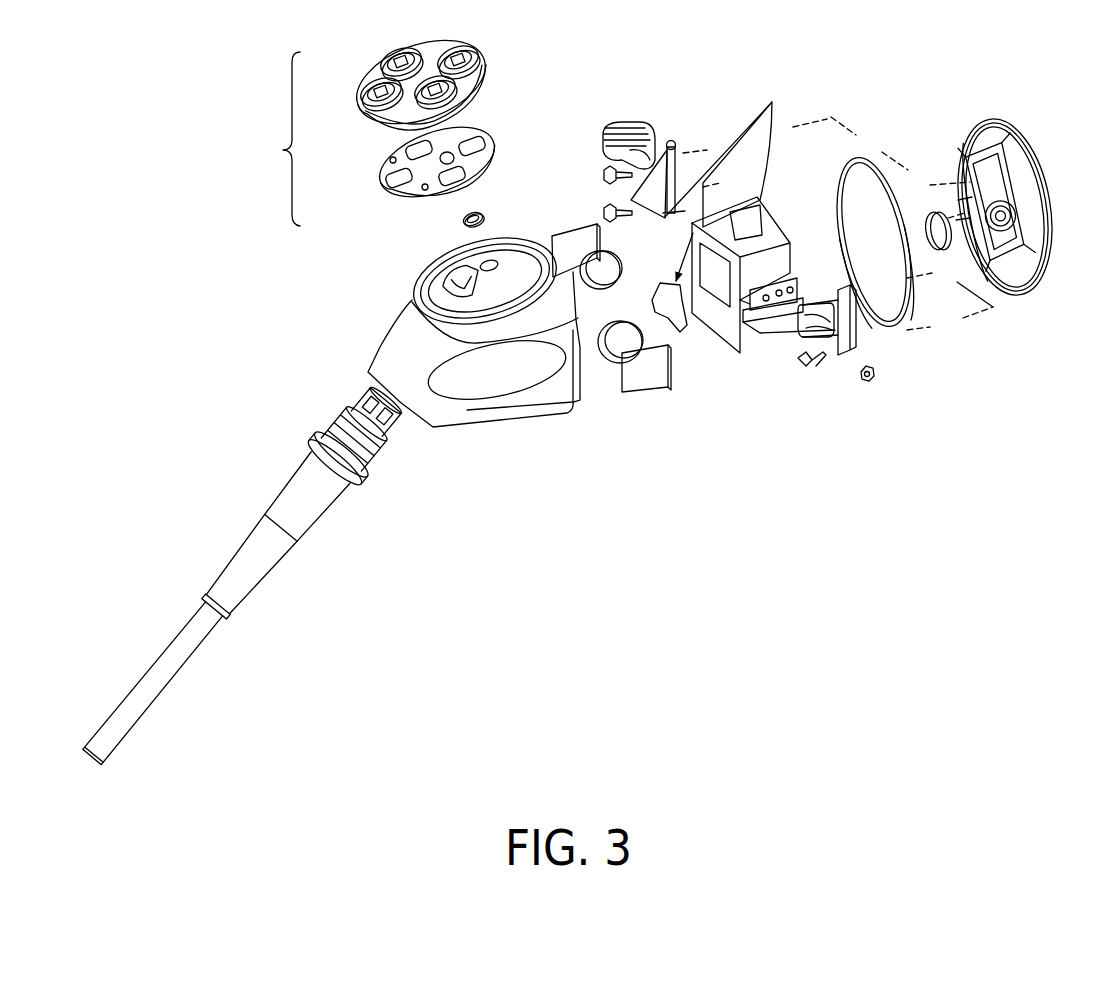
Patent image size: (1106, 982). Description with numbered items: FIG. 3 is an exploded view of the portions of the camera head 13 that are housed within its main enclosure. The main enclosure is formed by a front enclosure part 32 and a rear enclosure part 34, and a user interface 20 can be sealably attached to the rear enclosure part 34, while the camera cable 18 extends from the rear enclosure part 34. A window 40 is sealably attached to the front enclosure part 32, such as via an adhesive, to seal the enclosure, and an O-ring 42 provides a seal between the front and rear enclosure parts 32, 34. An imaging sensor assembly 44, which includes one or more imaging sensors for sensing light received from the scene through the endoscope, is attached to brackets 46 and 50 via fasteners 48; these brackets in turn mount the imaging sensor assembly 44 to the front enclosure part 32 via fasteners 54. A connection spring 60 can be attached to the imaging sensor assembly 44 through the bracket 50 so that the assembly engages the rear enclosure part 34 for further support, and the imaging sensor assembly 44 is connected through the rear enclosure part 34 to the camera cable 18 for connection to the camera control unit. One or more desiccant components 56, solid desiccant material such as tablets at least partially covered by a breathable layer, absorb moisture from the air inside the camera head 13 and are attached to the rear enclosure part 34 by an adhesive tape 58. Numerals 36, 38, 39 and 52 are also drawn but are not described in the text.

The camera head 13 is at (798, 52).
The camera cable 18 is at (263, 498).
The user interface 20 is at (405, 126).
The front enclosure part 32 is at (1053, 266).
The rear enclosure part 34 is at (380, 322).
The connector disc 36 is at (490, 67).
The spacer plate 38 is at (496, 138).
The seal 39 is at (460, 219).
The window 40 is at (940, 252).
The O-ring 42 is at (868, 153).
The imaging sensor assembly 44 is at (753, 203).
The bracket 46 is at (855, 327).
The fasteners 48 is at (862, 383).
The bracket 50 is at (678, 141).
The bracket 52 is at (830, 290).
The fasteners 54 is at (605, 176).
The desiccant components 56 is at (608, 360).
The adhesive tape 58 is at (565, 231).
The connection spring 60 is at (619, 121).